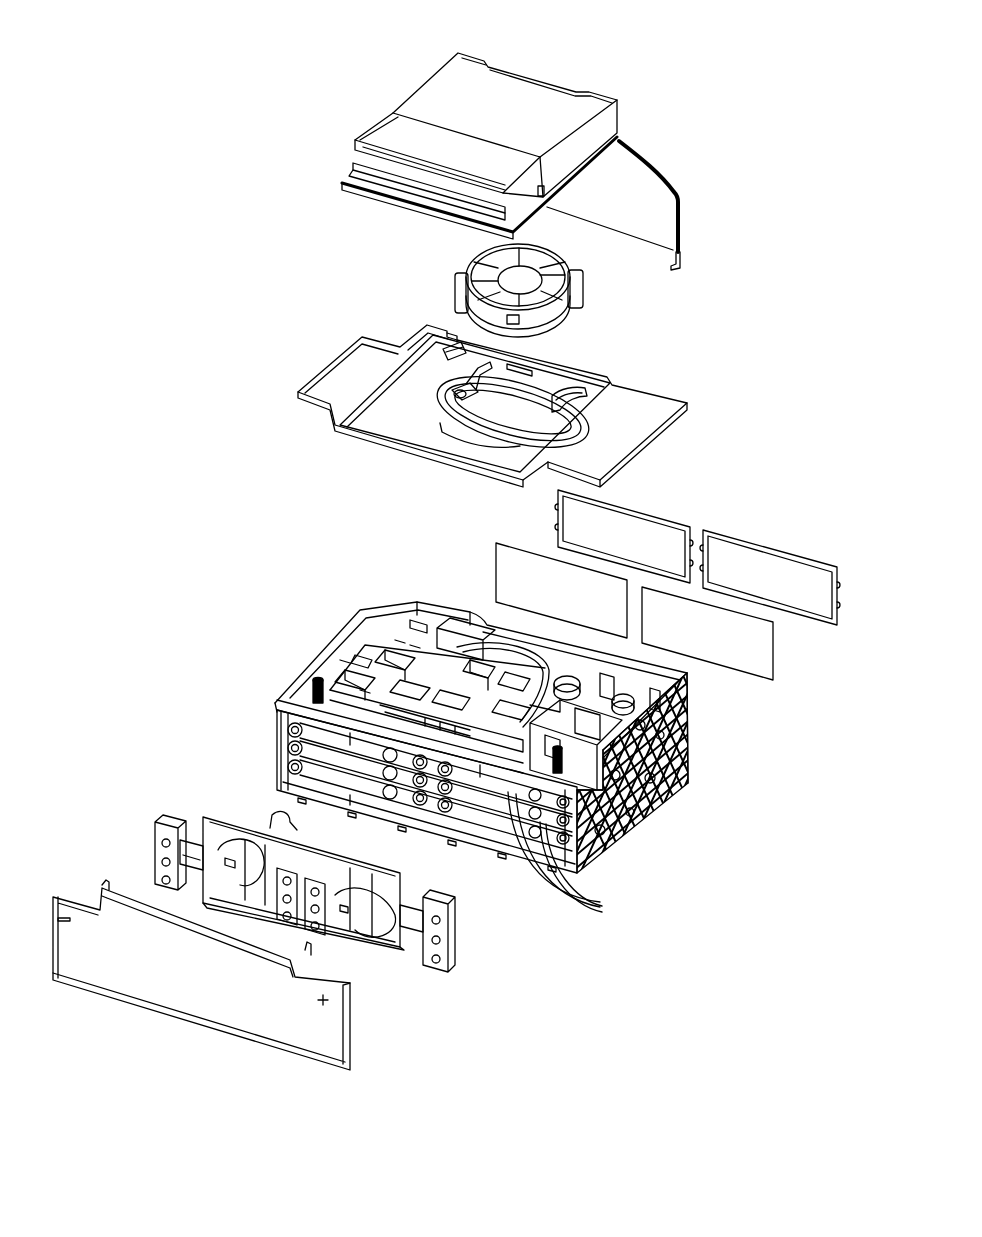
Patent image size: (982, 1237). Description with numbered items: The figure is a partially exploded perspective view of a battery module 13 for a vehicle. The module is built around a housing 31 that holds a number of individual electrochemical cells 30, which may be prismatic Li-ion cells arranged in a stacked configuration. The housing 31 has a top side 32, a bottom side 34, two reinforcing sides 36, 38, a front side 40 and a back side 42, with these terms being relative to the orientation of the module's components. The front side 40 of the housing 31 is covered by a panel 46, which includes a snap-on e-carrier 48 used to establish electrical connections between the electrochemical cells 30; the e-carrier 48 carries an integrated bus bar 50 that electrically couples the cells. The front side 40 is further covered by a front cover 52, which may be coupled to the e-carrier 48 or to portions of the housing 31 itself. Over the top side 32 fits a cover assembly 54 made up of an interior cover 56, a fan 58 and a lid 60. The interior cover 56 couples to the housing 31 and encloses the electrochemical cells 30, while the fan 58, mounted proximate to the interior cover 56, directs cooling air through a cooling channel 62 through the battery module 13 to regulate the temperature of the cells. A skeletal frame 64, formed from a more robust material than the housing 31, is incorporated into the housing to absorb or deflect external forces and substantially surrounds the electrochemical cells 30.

The battery module 13 is at (757, 56).
The electrochemical cells 30 is at (573, 856).
The housing 31 is at (725, 750).
The top side 32 is at (393, 585).
The bottom side 34 is at (642, 845).
The reinforcing side 36 is at (266, 748).
The reinforcing side 38 is at (718, 705).
The front side 40 is at (265, 791).
The back side 42 is at (477, 580).
The panel 46 is at (163, 790).
The e-carrier 48 is at (445, 968).
The integrated bus bar 50 is at (392, 962).
The front cover 52 is at (334, 1070).
The cover assembly 54 is at (290, 58).
The interior cover 56 is at (655, 390).
The fan 58 is at (585, 292).
The lid 60 is at (618, 97).
The cooling channel 62 is at (549, 392).
The skeletal frame 64 is at (387, 88).